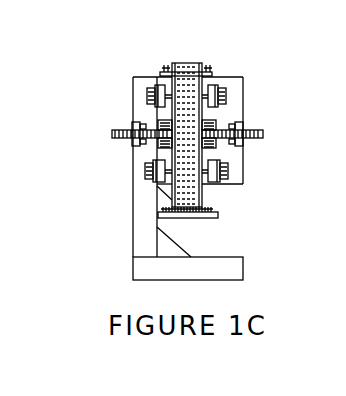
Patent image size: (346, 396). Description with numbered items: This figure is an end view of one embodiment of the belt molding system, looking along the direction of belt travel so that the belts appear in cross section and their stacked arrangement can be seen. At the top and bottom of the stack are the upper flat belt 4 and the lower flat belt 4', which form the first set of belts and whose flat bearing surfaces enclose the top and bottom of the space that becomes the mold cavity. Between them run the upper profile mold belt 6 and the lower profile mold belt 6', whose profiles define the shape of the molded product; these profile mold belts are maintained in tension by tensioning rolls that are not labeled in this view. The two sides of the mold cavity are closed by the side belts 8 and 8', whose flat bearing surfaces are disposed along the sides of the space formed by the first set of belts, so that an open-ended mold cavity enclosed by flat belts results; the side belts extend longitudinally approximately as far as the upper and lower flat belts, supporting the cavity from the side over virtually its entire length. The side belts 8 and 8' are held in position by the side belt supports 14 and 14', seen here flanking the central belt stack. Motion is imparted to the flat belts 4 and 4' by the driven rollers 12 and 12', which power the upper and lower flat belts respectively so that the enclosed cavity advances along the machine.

The upper profile mold belt 6 is at (186, 111).
The lower profile mold belt 6' is at (204, 220).
The upper flat belt 4 is at (239, 87).
The lower flat belt 4' is at (237, 169).
The side belt 8 is at (113, 143).
The side belt 8' is at (253, 143).
The driven roller 12 is at (126, 92).
The driven roller 12' is at (117, 174).
The side belt support 14 is at (109, 121).
The side belt support 14' is at (262, 122).